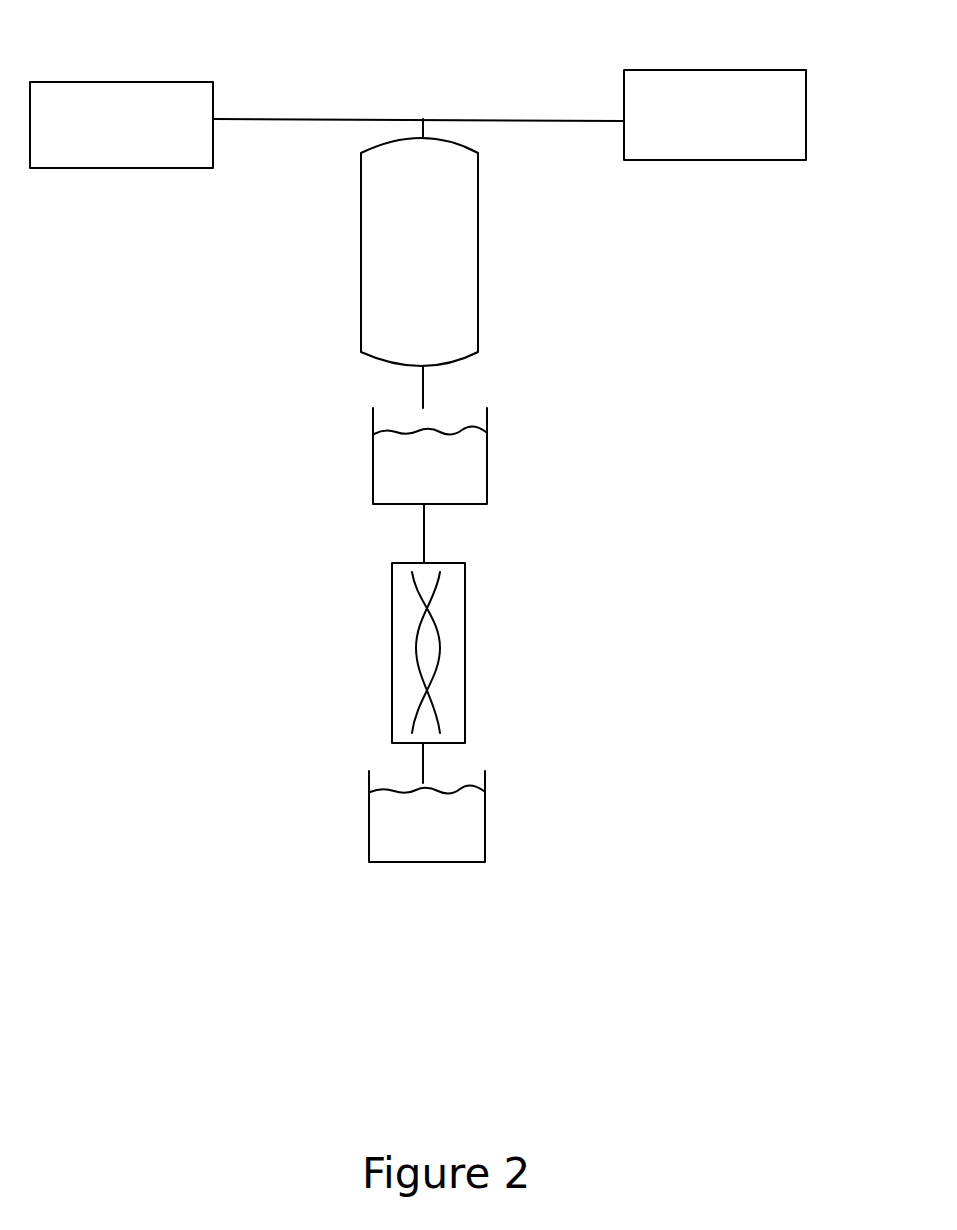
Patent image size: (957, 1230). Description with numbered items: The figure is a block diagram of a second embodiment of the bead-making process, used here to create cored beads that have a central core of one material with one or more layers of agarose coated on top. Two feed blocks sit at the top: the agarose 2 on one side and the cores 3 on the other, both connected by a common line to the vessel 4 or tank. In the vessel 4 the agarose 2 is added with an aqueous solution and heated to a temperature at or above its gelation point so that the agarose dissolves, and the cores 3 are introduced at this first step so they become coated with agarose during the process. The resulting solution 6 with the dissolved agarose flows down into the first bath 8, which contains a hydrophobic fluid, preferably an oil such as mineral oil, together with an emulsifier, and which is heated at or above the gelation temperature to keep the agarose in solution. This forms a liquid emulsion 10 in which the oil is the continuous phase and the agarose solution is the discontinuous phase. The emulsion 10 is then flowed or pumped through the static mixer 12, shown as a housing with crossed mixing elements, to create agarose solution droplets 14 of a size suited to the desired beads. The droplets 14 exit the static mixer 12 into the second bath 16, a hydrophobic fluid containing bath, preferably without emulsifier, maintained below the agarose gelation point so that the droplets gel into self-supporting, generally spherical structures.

The agarose 2 is at (785, 122).
The core 3 is at (143, 100).
The vessel 4 is at (450, 266).
The solution 6 is at (423, 391).
The first bath 8 is at (457, 477).
The emulsion 10 is at (424, 538).
The static mixer 12 is at (457, 643).
The agarose solution droplets 14 is at (423, 768).
The second bath 16 is at (450, 832).